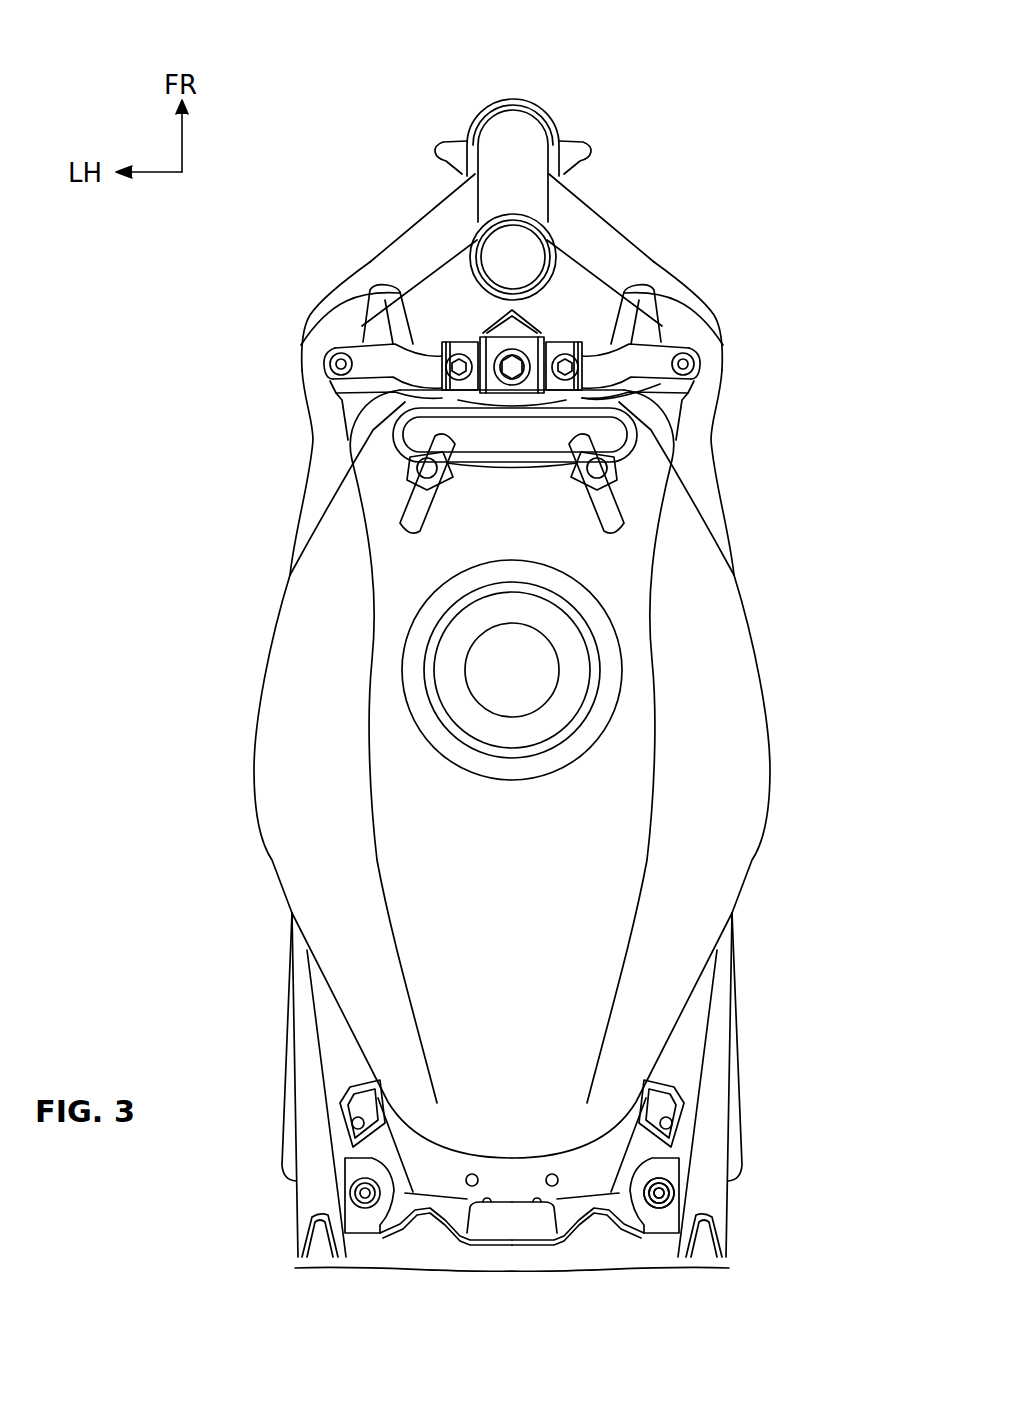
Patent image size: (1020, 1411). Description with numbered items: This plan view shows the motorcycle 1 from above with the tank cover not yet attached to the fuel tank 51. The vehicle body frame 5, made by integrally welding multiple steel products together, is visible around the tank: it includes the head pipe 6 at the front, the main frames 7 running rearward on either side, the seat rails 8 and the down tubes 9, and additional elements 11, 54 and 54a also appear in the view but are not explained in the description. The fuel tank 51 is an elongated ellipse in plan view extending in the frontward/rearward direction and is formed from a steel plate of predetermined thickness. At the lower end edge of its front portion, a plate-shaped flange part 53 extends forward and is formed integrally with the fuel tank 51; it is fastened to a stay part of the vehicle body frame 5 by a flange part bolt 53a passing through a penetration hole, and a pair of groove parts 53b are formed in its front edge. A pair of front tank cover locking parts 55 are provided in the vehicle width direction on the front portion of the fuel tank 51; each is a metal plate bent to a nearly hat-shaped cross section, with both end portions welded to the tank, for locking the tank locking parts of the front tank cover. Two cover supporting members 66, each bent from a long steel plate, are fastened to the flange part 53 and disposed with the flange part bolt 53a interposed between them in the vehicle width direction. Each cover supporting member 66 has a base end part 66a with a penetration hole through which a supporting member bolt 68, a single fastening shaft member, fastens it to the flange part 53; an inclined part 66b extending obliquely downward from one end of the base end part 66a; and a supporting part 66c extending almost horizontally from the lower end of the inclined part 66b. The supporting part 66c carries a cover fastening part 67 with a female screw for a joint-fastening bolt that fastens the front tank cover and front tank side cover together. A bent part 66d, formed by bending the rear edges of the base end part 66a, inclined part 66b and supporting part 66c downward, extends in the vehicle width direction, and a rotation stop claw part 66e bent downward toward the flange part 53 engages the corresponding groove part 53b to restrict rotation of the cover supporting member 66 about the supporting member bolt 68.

The motorcycle 1 is at (346, 90).
The vehicle body frame 5 is at (340, 228).
The head pipe 6 is at (510, 137).
The main frames 7 is at (304, 485).
The seat rails 8 is at (333, 1041).
The down tubes 9 is at (452, 223).
The rear frame member 11 is at (307, 1200).
The fuel tank 51 is at (470, 835).
The flange part 53 is at (565, 343).
The flange part bolt 53a is at (455, 345).
The groove parts 53b is at (452, 342).
The tank rear mounting portion 54 is at (340, 1180).
The tank rear mounting bolt 54a is at (684, 1180).
The front tank cover locking parts 55 is at (460, 497).
The cover supporting members 66 is at (373, 340).
The base end part 66a is at (642, 318).
The inclined part 66b is at (660, 348).
The supporting part 66c is at (662, 364).
The bent part 66d is at (350, 387).
The rotation stop claw part 66e is at (428, 318).
The cover fastening part 67 is at (330, 366).
The supporting member bolt 68 is at (452, 397).